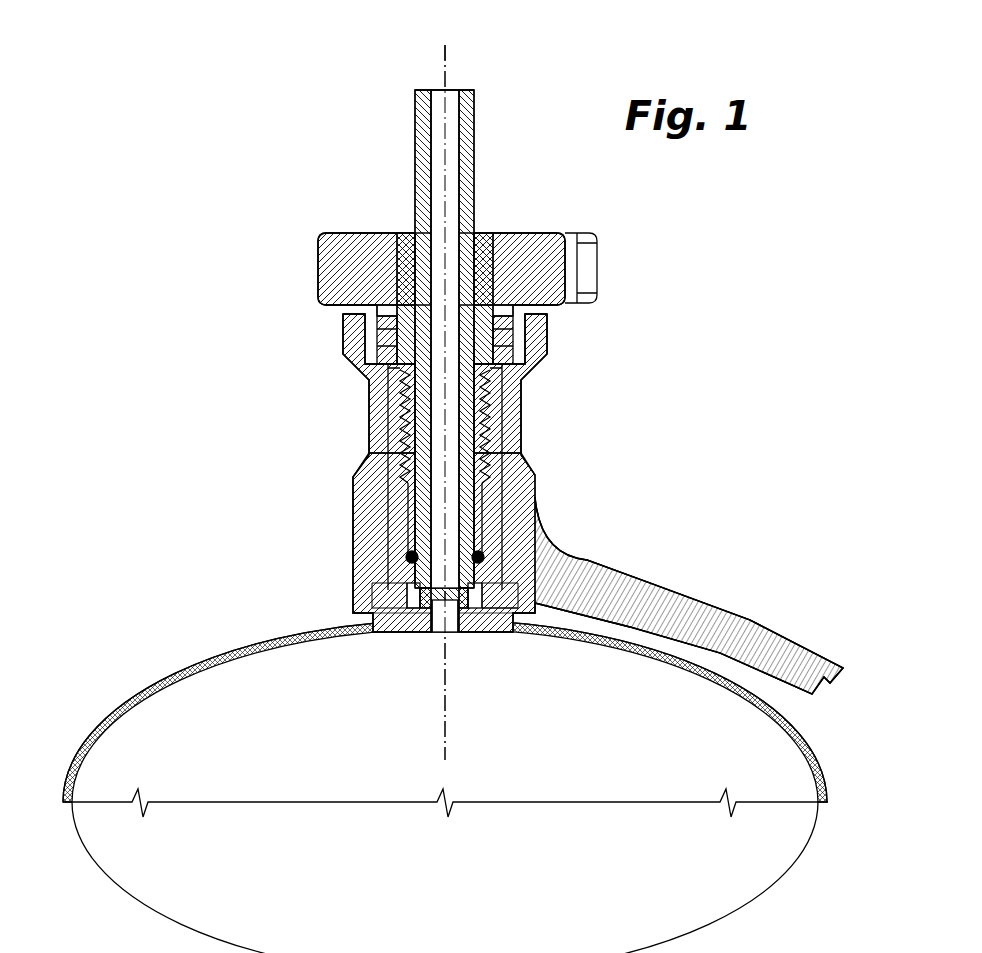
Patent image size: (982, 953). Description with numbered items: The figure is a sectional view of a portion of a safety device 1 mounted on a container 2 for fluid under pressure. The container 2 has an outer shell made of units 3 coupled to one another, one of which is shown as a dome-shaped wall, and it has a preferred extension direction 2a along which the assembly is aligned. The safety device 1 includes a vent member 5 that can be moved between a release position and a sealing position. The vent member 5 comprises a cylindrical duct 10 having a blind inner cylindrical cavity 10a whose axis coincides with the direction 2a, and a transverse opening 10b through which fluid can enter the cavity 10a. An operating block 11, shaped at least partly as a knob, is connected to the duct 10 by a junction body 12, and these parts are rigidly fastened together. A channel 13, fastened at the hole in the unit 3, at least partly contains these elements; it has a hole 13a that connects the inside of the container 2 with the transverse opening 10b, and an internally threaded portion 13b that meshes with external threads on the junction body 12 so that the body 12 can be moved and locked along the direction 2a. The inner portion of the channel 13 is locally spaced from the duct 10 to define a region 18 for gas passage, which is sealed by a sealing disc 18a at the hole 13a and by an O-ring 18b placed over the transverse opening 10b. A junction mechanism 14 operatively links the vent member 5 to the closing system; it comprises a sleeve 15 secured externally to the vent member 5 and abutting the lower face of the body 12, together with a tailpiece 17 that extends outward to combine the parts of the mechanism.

The safety device 1 is at (196, 97).
The container 2 is at (445, 773).
The preferred extension direction 2a is at (452, 62).
The units 3 is at (247, 645).
The vent member 5 is at (181, 338).
The cylindrical duct 10 is at (380, 402).
The inner cylindrical cavity 10a is at (436, 98).
The transverse opening 10b is at (410, 590).
The operating block 11 is at (318, 260).
The junction body 12 is at (478, 240).
The channel 13 is at (430, 529).
The hole 13a is at (432, 638).
The internally threaded portion 13b is at (400, 450).
The junction mechanism 14 is at (689, 594).
The sleeve 15 is at (345, 350).
The tailpiece 17 is at (702, 607).
The region for gas passage 18 is at (493, 593).
The sealing disc 18a is at (458, 638).
The O-ring 18b is at (480, 558).